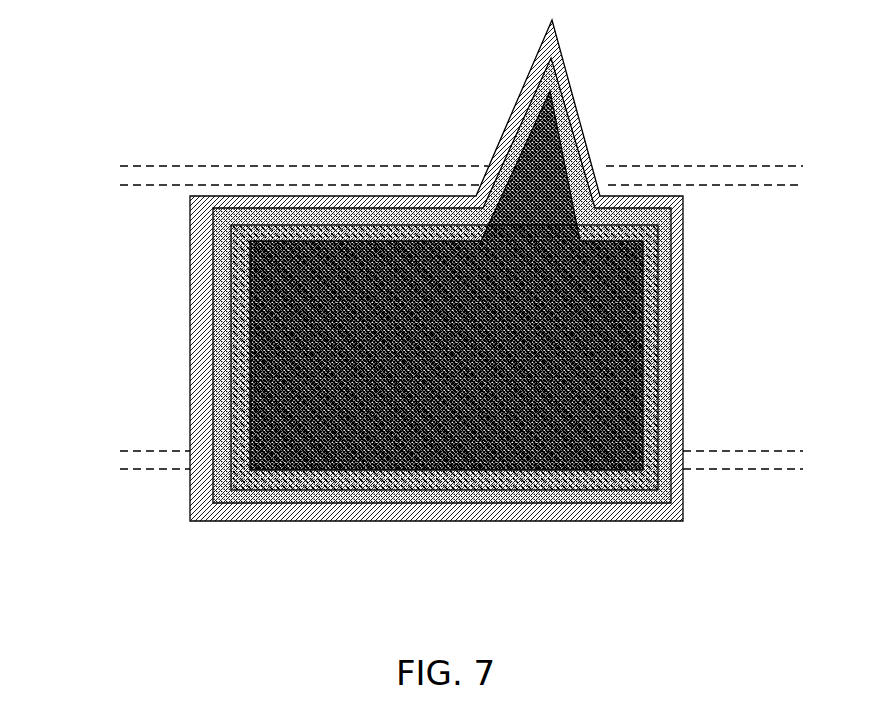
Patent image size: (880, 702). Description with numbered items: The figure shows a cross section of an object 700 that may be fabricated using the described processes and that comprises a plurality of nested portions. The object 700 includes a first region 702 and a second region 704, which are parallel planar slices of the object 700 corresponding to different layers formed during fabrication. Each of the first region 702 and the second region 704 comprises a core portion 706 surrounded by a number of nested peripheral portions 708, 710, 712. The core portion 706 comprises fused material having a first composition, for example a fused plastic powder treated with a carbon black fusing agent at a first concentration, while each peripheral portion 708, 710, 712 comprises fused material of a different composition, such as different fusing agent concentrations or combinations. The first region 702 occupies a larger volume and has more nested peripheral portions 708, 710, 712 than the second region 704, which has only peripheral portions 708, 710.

The object 700 is at (427, 331).
The first region 702 is at (103, 443).
The second region 704 is at (103, 158).
The core portion 706 is at (446, 280).
The peripheral portion 708 is at (675, 233).
The peripheral portion 710 is at (656, 328).
The peripheral portion 712 is at (647, 380).